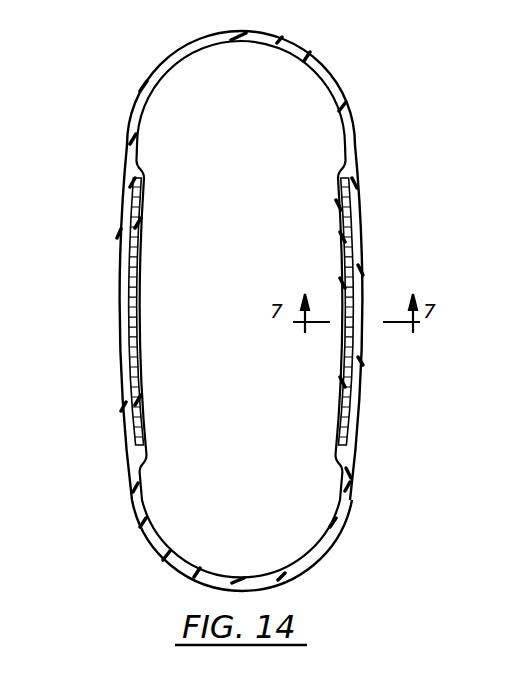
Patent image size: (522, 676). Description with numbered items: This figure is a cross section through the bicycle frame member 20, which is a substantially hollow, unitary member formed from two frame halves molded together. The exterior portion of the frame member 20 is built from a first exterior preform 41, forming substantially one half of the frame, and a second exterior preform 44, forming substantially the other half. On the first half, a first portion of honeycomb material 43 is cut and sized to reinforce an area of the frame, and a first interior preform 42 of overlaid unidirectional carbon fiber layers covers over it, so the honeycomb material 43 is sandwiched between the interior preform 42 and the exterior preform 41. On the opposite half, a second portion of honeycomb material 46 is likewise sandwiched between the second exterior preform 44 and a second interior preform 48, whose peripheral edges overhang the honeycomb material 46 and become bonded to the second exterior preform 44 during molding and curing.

The frame member 20 is at (364, 88).
The first exterior preform 41 is at (364, 249).
The first interior preform 42 is at (338, 221).
The first portion of honeycomb material 43 is at (358, 207).
The second exterior preform 44 is at (120, 298).
The second portion of honeycomb material 46 is at (130, 254).
The second interior preform 48 is at (142, 240).